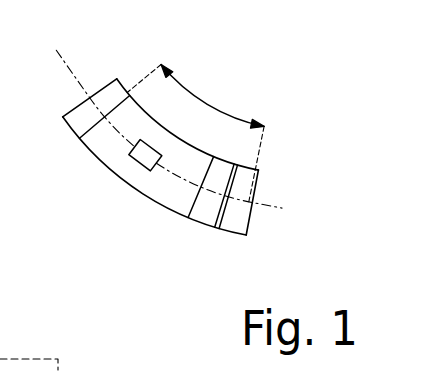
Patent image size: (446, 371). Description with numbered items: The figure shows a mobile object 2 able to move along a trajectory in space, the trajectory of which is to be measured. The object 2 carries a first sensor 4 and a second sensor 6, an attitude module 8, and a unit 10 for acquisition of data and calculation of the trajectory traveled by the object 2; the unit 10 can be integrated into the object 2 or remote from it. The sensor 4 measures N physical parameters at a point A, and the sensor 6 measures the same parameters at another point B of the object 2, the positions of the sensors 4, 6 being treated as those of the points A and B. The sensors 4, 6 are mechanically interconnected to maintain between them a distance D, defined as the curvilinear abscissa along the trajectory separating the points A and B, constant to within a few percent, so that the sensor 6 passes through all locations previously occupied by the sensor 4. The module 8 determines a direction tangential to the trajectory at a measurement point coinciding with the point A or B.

The mobile object 2 is at (167, 208).
The first sensor 4 is at (259, 168).
The second sensor 6 is at (123, 86).
The attitude module 8 is at (198, 214).
The unit for acquisition of data and calculation of the trajectory 10 is at (139, 166).
The point A is at (244, 202).
The point B is at (96, 110).
The distance D is at (195, 133).